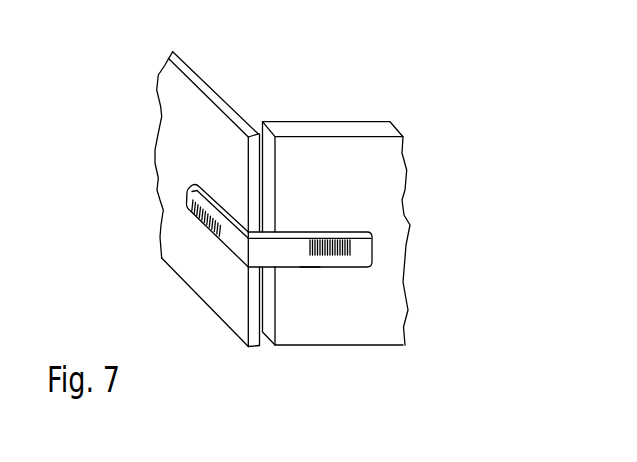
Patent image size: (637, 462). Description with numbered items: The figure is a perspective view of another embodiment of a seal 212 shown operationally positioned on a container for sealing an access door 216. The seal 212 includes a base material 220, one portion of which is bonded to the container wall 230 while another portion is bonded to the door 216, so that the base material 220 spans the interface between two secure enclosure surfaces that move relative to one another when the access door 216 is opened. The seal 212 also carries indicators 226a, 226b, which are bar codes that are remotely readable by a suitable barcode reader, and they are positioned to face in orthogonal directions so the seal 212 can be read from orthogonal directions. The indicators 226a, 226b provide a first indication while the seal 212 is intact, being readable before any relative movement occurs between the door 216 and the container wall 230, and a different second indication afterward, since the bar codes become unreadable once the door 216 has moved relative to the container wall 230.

The seal 212 is at (308, 267).
The access door 216 is at (354, 122).
The base material 220 is at (358, 232).
The indicator 226a is at (343, 258).
The indicator 226b is at (199, 218).
The container wall 230 is at (219, 94).